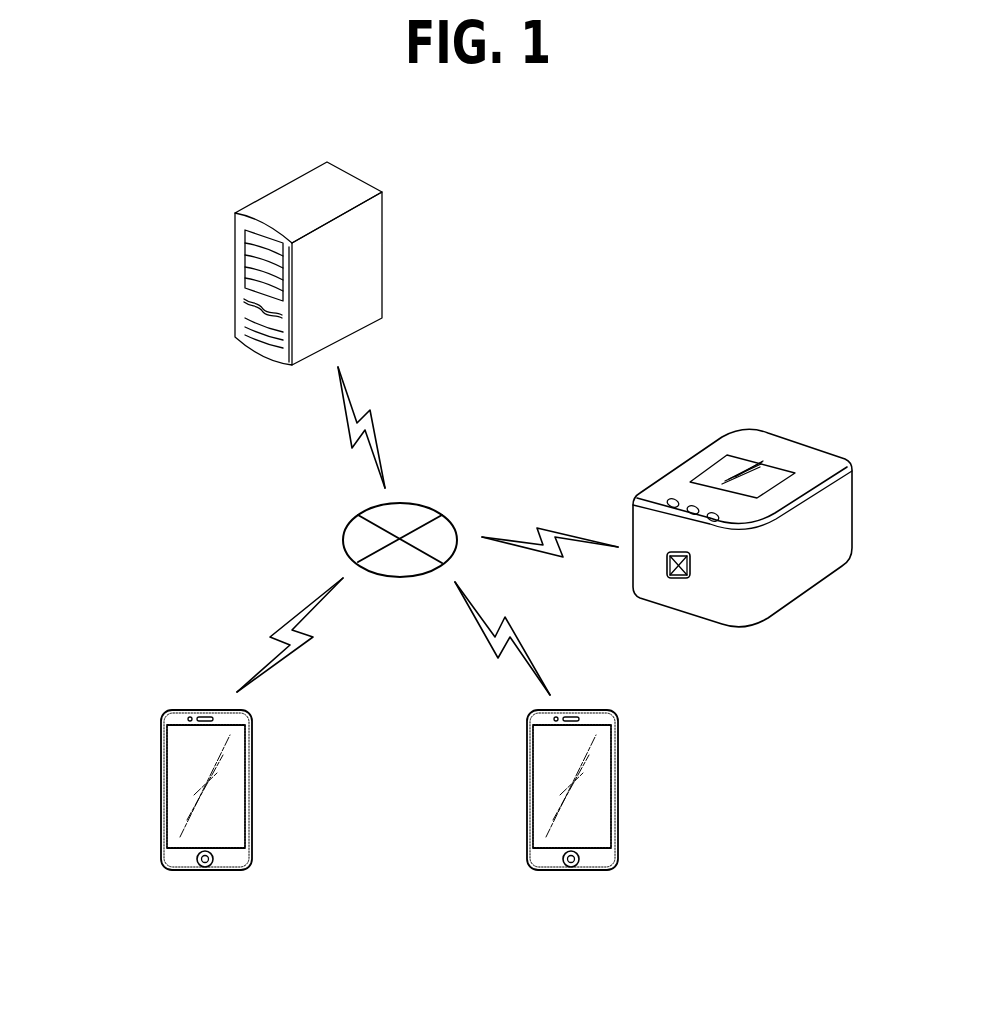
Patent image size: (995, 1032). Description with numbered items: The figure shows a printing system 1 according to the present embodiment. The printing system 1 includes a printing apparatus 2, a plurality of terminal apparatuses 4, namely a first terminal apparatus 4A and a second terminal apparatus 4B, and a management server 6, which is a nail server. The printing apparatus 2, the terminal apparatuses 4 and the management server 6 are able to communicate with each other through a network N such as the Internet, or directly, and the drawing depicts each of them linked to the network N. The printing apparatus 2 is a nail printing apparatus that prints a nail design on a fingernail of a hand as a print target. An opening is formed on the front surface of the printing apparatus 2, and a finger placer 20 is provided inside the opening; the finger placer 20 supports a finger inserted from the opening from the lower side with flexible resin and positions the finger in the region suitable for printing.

The printing system 1 is at (641, 262).
The printing apparatus 2 is at (810, 432).
The terminal apparatuses 4 is at (331, 784).
The first terminal apparatus 4A is at (161, 757).
The second terminal apparatus 4B is at (527, 757).
The management server 6 is at (283, 200).
The finger placer 20 is at (673, 578).
The network N is at (430, 507).